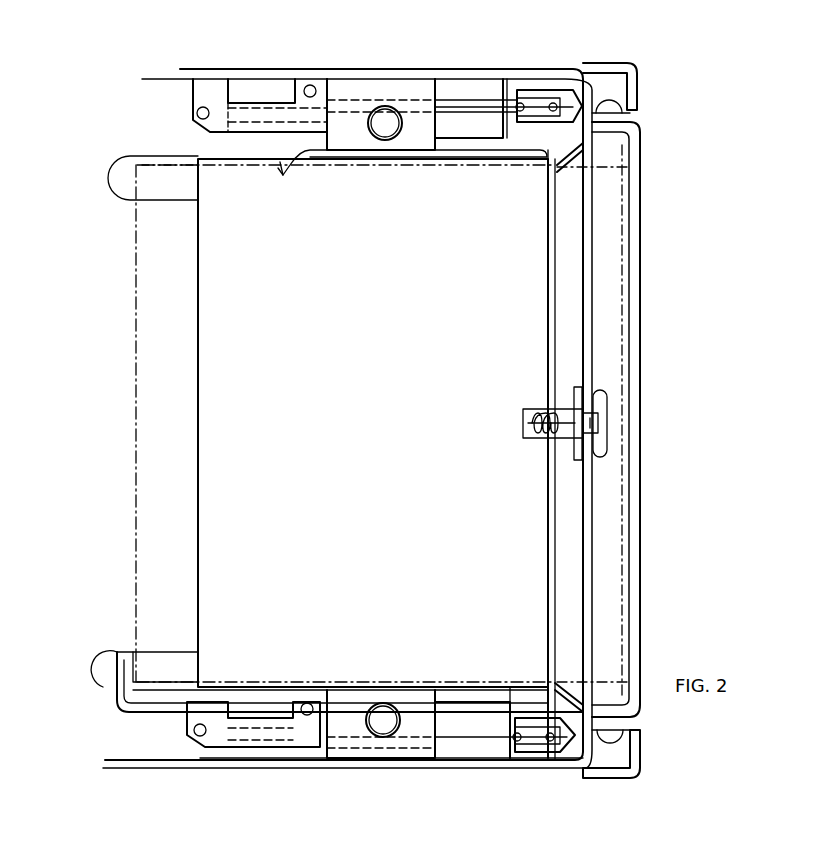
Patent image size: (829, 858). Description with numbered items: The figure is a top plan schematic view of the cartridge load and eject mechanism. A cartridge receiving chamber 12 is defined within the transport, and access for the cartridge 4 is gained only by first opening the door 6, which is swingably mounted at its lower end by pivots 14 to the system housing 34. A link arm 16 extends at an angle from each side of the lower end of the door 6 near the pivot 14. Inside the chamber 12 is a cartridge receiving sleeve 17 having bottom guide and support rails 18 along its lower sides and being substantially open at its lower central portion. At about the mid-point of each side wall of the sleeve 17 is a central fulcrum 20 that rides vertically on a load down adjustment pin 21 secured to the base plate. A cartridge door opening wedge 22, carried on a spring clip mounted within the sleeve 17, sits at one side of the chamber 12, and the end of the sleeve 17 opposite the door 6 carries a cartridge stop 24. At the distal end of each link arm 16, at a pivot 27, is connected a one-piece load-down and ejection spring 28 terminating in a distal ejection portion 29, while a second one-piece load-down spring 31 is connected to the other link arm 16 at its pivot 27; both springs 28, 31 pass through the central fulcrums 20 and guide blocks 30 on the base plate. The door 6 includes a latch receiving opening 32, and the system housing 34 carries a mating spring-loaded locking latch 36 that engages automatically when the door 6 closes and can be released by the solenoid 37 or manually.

The cartridge 4 is at (136, 372).
The door 6 is at (605, 613).
The cartridge receiving chamber 12 is at (108, 511).
The pivot 14 is at (618, 762).
The link arm 16 is at (582, 80).
The cartridge receiving sleeve 17 is at (318, 398).
The bottom guide and support rail 18 is at (168, 178).
The central fulcrum 20 is at (400, 90).
The load down adjustment pin 21 is at (392, 127).
The cartridge door opening wedge 22 is at (347, 157).
The cartridge stop 24 is at (133, 655).
The pivot 27 is at (540, 92).
The one-piece load-down and ejection spring 28 is at (475, 737).
The distal ejection portion 29 is at (122, 708).
The guide block 30 is at (307, 750).
The second one-piece load-down spring 31 is at (475, 105).
The latch receiving opening 32 is at (606, 443).
The system housing 34 is at (436, 768).
The locking latch 36 is at (600, 422).
The solenoid 37 is at (535, 410).